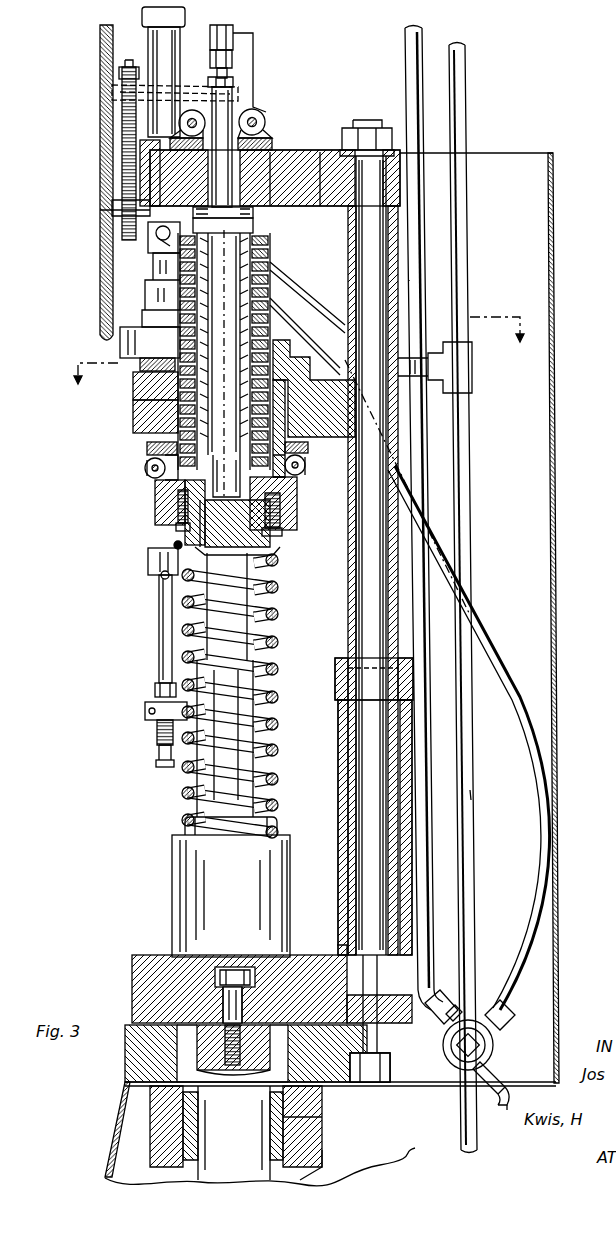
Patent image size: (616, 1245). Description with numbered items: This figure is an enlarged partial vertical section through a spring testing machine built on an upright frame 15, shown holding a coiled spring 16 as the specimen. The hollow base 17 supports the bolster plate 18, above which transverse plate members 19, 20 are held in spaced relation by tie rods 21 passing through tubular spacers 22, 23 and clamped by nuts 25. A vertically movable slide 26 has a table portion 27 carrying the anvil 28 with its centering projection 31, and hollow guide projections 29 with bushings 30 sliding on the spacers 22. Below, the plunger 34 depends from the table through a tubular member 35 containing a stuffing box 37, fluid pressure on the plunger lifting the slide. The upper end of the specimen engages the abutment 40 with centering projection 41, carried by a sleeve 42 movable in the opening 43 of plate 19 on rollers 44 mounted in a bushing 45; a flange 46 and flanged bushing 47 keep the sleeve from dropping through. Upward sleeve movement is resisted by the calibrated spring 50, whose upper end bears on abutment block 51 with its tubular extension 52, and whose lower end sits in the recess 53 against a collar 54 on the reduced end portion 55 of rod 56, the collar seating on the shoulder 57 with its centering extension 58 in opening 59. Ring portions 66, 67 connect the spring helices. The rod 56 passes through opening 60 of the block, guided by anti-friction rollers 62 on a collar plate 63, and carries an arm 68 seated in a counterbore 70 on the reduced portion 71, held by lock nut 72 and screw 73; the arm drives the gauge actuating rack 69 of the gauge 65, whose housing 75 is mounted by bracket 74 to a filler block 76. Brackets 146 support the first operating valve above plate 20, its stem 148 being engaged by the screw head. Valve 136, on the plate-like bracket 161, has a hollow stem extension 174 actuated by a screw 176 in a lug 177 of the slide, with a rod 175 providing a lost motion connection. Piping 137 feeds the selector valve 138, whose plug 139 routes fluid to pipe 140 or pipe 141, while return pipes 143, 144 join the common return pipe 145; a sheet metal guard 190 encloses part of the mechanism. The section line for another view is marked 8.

The section line 8- 8 is at (297, 361).
The upright frame 15 is at (400, 553).
The coiled spring 16 is at (280, 613).
The hollow base 17 is at (114, 1124).
The bolster plate 18 is at (125, 1058).
The transverse plate member 19 is at (310, 447).
The top or crown plate 20 is at (326, 160).
The tie rod 21 is at (370, 567).
The tubular spacer 22 is at (398, 597).
The tubular spacer 23 is at (392, 272).
The nut 25 is at (366, 120).
The plunger or slide 26 is at (140, 957).
The table portion 27 is at (312, 950).
The anvil 28 is at (172, 862).
The hollow guide projection 29 is at (338, 703).
The bushing 30 is at (338, 660).
The centering projection 31 is at (208, 830).
The plunger 34 is at (190, 1160).
The tubular member 35 is at (322, 1128).
The stuffing box 37 is at (330, 1160).
The anvil block or abutment 40 is at (272, 520).
The centering projection 41 is at (276, 548).
The sleeve 42 is at (298, 485).
The opening 43 is at (300, 370).
The roller 44 is at (307, 463).
The bushing 45 is at (145, 465).
The flange 46 is at (140, 366).
The flanged bushing 47 is at (135, 385).
The spring 50 is at (270, 242).
The abutment block 51 is at (290, 164).
The tubular bushing or extension 52 is at (255, 226).
The recess 53 is at (135, 415).
The abutment plate or collar 54 is at (155, 490).
The reduced end portion 55 is at (185, 500).
The rod 56 is at (298, 306).
The annular shoulder or face 57 is at (232, 455).
The centering extension 58 is at (282, 505).
The opening 59 is at (174, 544).
The opening 60 is at (255, 150).
The anti-friction roller 62 is at (262, 108).
The bracket or collar plate 63 is at (268, 125).
The gauge 65 is at (100, 61).
The ring portion 66 is at (147, 448).
The ring portion 67 is at (255, 212).
The arm 68 is at (186, 86).
The gauge actuating rack 69 is at (122, 123).
The counterbore 70 is at (236, 80).
The reduced portion 71 is at (240, 100).
The lock nut 72 is at (230, 72).
The screw 73 is at (211, 60).
The bracket 74 is at (140, 150).
The housing 75 is at (112, 212).
The filler block 76 is at (147, 235).
The operating valve 136 is at (148, 60).
The piping 137 is at (509, 1104).
The selector valve 138 is at (494, 1040).
The valve plug 139 is at (476, 1048).
The pipe 140 is at (431, 765).
The pipe 141 is at (492, 645).
The return pipe 143 is at (465, 92).
The return pipe 144 is at (296, 283).
The common return pipe 145 is at (470, 792).
The bracket 146 is at (253, 45).
The valve actuating stem 148 is at (228, 28).
The plate-like bracket 161 is at (120, 350).
The hollow actuating stem extension 174 is at (148, 560).
The rod 175 is at (159, 610).
The screw 176 is at (155, 690).
The lug 177 is at (145, 712).
The sheet metal guard 190 is at (557, 590).